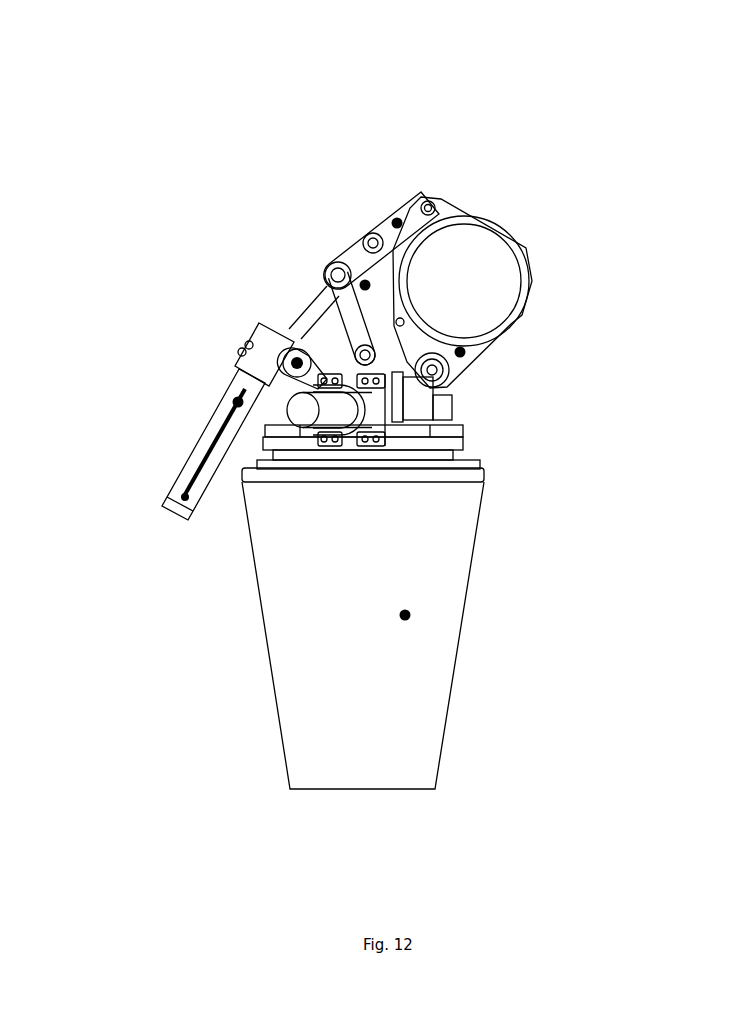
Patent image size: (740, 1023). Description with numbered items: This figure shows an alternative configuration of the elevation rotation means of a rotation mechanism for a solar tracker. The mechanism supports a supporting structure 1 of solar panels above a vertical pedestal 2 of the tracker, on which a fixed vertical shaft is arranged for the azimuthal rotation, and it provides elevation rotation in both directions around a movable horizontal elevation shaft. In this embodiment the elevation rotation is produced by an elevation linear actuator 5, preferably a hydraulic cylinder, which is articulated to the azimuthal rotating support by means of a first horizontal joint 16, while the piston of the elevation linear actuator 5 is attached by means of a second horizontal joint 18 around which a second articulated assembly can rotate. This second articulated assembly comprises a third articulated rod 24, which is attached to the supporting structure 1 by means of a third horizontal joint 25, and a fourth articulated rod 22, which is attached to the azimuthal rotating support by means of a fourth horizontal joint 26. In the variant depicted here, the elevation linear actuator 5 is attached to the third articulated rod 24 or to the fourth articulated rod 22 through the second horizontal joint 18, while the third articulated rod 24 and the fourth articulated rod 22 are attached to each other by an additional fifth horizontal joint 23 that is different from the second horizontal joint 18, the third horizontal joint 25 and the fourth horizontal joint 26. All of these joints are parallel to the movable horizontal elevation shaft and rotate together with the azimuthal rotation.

The supporting structure 1 is at (466, 352).
The vertical pedestal 2 is at (410, 617).
The elevation linear actuator 5 is at (232, 400).
The first horizontal joint 16 is at (257, 345).
The second horizontal joint 18 is at (330, 270).
The fourth articulated rod 22 is at (360, 283).
The fifth horizontal joint 23 is at (372, 236).
The third articulated rod 24 is at (399, 218).
The third horizontal joint 25 is at (432, 203).
The fourth horizontal joint 26 is at (400, 373).